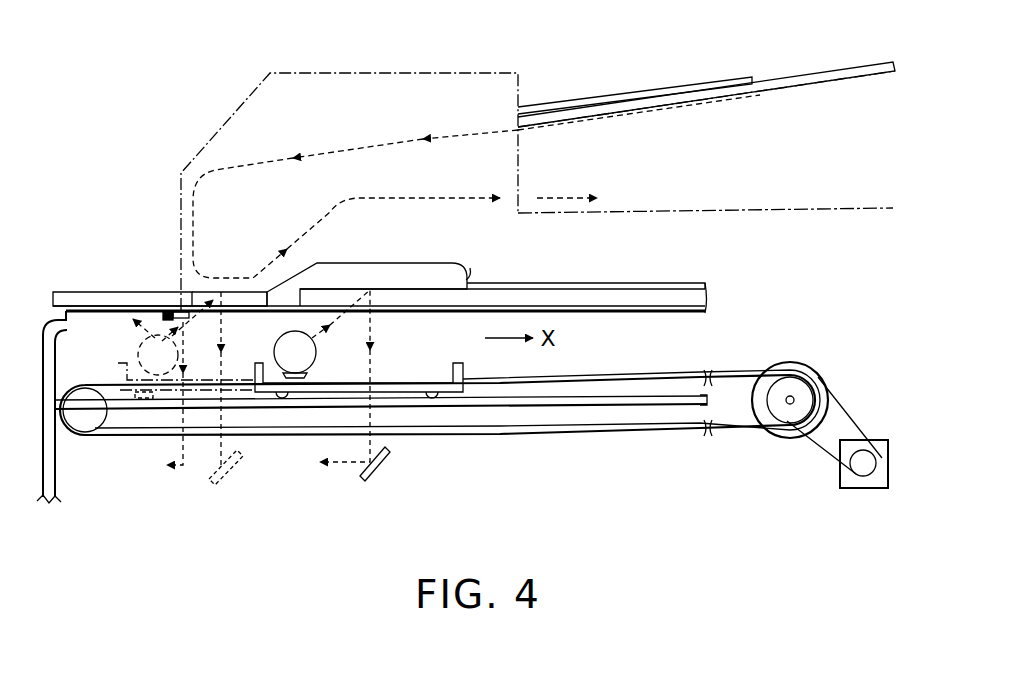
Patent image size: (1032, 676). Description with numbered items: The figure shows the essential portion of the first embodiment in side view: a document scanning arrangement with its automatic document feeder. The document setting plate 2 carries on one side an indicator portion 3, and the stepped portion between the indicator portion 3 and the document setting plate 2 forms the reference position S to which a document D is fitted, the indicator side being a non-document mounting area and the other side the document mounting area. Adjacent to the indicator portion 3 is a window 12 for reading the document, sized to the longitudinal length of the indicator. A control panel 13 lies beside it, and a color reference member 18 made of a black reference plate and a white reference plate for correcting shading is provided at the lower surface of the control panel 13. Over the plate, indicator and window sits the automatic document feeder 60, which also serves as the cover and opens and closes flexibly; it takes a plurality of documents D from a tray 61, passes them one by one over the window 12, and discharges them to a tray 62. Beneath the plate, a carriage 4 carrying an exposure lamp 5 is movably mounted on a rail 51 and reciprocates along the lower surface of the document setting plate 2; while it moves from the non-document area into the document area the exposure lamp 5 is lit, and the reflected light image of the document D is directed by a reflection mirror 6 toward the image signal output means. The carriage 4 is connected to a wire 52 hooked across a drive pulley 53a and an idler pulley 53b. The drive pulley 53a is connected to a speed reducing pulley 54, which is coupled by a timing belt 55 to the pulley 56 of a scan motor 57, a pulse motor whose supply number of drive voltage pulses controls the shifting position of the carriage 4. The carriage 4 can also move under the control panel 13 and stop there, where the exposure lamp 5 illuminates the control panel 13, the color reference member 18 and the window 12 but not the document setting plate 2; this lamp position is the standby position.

The automatic document feeder 60 is at (428, 72).
The tray 61 is at (837, 70).
The tray 62 is at (748, 208).
The document D is at (695, 87).
The control panel 13 is at (95, 292).
The window 12 is at (240, 292).
The color reference member 18 is at (163, 320).
The indicator portion 3 is at (434, 263).
The reference position S is at (470, 268).
The document setting plate 2 is at (512, 289).
The exposure lamp 5 is at (138, 352).
The carriage 4 is at (125, 366).
The reflection mirror 6 is at (240, 467).
The wire 52 is at (618, 378).
The rail 51 is at (477, 412).
The drive pulley 53a is at (790, 420).
The idler pulley 53b is at (88, 425).
The speed reducing pulley 54 is at (810, 366).
The timing belt 55 is at (848, 410).
The pulley 56 is at (840, 470).
The scan motor 57 is at (878, 440).